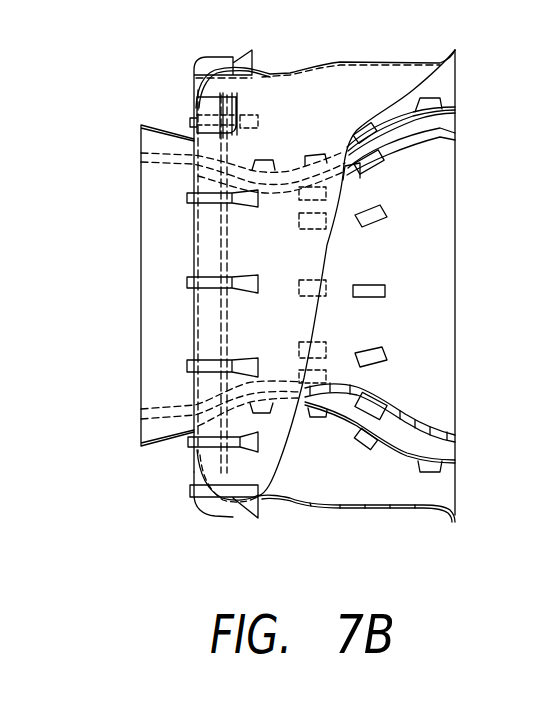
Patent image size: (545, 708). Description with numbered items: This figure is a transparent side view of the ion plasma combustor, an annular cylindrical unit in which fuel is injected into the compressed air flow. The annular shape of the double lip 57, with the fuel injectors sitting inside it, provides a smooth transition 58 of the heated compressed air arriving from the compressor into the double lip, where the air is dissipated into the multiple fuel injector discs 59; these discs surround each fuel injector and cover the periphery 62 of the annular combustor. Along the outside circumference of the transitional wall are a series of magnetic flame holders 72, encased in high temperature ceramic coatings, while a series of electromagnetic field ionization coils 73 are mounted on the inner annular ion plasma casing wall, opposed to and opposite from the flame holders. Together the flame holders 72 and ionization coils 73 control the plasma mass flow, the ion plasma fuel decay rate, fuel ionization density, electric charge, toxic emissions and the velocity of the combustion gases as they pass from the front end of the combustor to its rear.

The double lip 57 is at (454, 443).
The smooth transition 58 is at (390, 442).
The fuel injector disc 59 is at (223, 144).
The periphery 62 is at (209, 241).
The magnetic flame holder 72 is at (387, 209).
The electromagnetic field ionization coil 73 is at (310, 228).